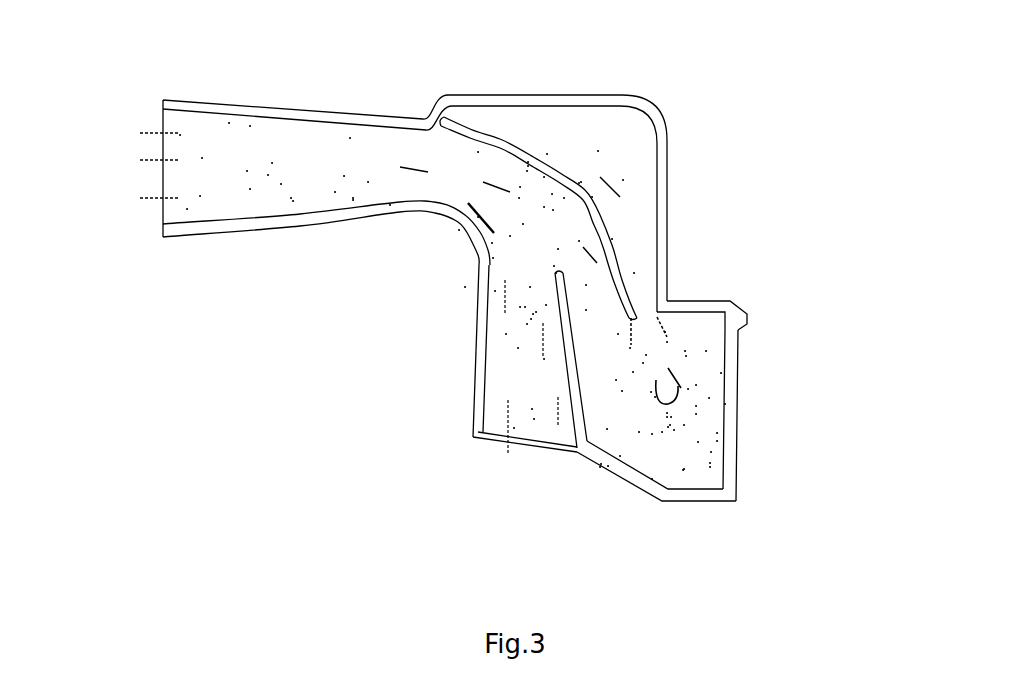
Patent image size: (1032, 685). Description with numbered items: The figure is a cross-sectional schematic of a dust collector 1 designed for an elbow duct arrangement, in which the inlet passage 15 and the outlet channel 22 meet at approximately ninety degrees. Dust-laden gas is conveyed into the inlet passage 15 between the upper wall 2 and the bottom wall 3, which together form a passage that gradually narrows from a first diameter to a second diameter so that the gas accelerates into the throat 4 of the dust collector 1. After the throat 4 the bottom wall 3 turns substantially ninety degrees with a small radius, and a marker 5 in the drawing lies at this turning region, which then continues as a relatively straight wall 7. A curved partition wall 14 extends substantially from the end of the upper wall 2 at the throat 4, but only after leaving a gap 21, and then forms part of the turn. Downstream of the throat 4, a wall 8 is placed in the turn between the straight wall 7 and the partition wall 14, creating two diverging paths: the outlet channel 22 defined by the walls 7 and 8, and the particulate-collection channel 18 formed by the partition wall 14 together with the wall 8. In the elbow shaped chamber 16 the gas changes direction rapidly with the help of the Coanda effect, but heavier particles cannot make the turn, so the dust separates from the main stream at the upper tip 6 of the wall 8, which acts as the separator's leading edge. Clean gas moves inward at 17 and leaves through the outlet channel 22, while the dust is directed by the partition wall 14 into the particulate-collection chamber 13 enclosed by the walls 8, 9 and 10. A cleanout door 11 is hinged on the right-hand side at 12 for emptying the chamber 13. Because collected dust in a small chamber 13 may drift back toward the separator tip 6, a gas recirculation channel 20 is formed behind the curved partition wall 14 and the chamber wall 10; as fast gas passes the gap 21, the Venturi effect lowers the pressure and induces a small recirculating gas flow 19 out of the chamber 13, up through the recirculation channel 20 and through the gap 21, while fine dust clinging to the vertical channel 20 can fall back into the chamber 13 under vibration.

The dust collector 1 is at (700, 98).
The upper wall 2 is at (260, 102).
The bottom wall 3 is at (250, 224).
The throat 4 is at (377, 118).
The inner surface of lower wall 5 is at (452, 213).
The upper tip of wall 8 6 is at (480, 316).
The straight wall 7 is at (487, 340).
The wall 8 is at (560, 343).
The wall 9 is at (667, 501).
The chamber wall 10 is at (670, 197).
The cleanout door 11 is at (742, 433).
The hinge 12 is at (745, 312).
The particulate-collection chamber 13 is at (683, 413).
The curved partition wall 14 is at (508, 122).
The inlet passage 15 is at (143, 150).
The elbow shaped chamber 16 is at (466, 206).
The inward flow of clean gas 17 is at (523, 268).
The particulate-collection channel 18 is at (587, 240).
The recirculating gas flow 19 is at (667, 323).
The gas recirculation channel 20 is at (648, 297).
The gap 21 is at (433, 112).
The outlet channel 22 is at (535, 435).